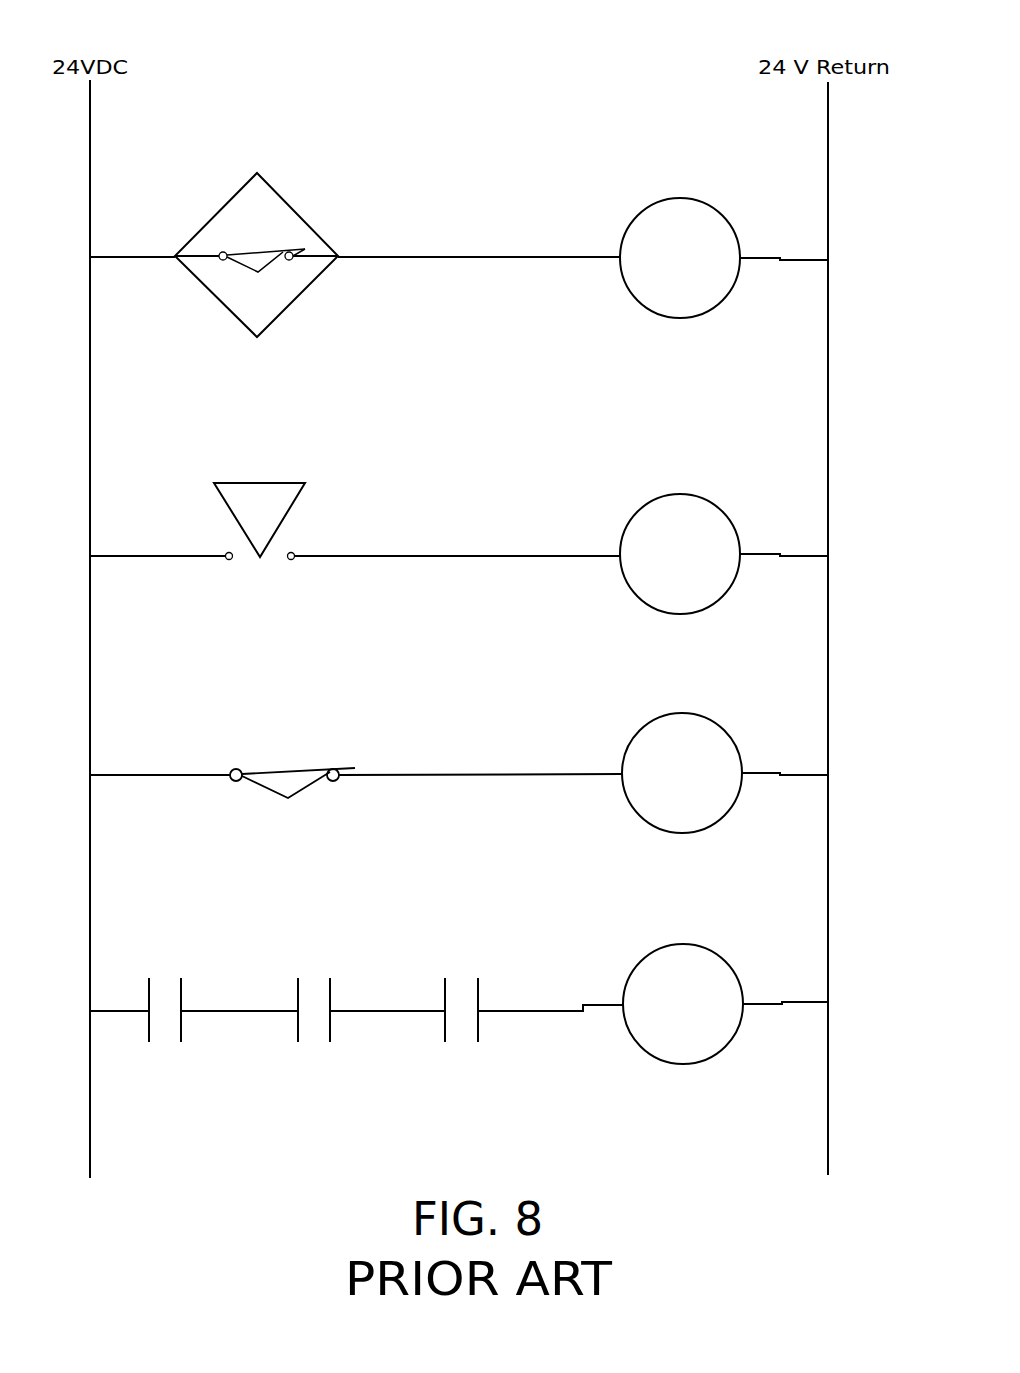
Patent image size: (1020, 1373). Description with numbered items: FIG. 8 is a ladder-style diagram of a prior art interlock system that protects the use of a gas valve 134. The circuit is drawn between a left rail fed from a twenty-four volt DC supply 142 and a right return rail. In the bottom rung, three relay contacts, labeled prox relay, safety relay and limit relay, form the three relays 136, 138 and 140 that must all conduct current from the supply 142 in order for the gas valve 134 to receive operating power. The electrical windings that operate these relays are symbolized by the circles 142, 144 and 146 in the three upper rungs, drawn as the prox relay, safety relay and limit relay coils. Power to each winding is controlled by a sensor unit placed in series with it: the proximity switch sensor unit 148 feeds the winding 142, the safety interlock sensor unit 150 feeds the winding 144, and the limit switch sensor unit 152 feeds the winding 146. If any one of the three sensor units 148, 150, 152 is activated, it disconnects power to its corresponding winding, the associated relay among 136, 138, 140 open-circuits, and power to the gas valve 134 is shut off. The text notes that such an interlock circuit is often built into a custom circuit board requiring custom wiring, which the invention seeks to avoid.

The gas valve 134 is at (758, 976).
The relay 136 is at (196, 976).
The relay 138 is at (344, 976).
The relay 140 is at (496, 976).
The 24VDC supply 142 is at (606, 194).
The relay winding 144 is at (607, 504).
The relay winding 146 is at (608, 754).
The sensor unit 148 is at (318, 190).
The sensor unit 150 is at (319, 498).
The sensor unit 152 is at (319, 748).